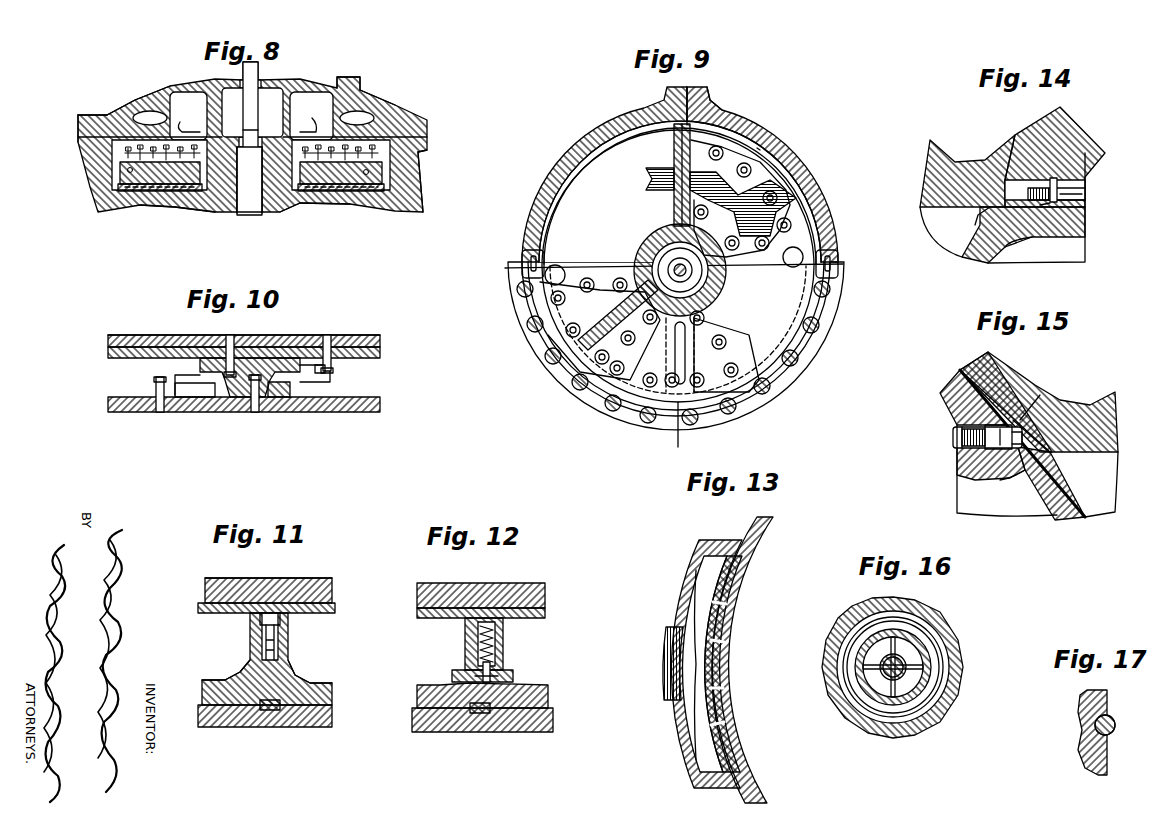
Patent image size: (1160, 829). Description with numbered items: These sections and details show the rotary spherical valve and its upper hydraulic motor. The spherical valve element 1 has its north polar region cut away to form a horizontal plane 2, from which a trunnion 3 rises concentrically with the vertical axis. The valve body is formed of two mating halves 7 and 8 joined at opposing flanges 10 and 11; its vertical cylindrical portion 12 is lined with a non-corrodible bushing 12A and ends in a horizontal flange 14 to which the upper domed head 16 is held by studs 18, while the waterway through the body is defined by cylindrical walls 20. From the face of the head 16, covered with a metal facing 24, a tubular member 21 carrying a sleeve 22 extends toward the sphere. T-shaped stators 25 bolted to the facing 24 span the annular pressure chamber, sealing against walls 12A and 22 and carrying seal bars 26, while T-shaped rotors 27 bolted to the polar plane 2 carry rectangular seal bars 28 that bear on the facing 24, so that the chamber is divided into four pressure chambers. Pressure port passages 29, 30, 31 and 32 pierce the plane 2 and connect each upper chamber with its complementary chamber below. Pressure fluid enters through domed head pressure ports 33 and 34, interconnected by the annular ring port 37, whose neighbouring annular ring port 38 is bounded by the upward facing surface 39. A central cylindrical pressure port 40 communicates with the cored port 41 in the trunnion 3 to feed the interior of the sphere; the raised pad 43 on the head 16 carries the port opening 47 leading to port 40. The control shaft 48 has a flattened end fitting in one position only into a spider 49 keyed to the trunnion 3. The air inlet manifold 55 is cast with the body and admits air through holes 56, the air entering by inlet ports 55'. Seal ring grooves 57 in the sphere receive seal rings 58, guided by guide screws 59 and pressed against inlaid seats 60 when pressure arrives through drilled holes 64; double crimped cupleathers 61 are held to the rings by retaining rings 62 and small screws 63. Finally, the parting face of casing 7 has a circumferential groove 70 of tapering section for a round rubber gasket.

In FIG. 8, the spherical valve element 1 is at (385, 212).
In FIG. 10, the spherical valve element 1 is at (148, 412).
In FIG. 11, the spherical valve element 1 is at (332, 720).
In FIG. 12, the spherical valve element 1 is at (412, 718).
In FIG. 13, the spherical valve element 1 is at (733, 640).
In FIG. 14, the spherical valve element 1 is at (985, 264).
In FIG. 15, the spherical valve element 1 is at (1062, 520).
In FIG. 8, the horizontal polar plane 2 is at (198, 212).
In FIG. 10, the horizontal polar plane 2 is at (125, 392).
In FIG. 11, the horizontal polar plane 2 is at (202, 692).
In FIG. 12, the horizontal polar plane 2 is at (548, 697).
In FIG. 8, the upper trunnion 3 is at (232, 213).
In FIG. 9, the upper trunnion 3 is at (654, 238).
In FIG. 16, the upper trunnion 3 is at (920, 625).
In FIG. 9, the valve body half 7 is at (614, 130).
In FIG. 14, the valve body half 7 is at (925, 175).
In FIG. 17, the valve body half 7 is at (1107, 705).
In FIG. 9, the valve body half 8 is at (757, 148).
In FIG. 15, the valve body half 8 is at (1115, 418).
In FIG. 9, the valve body flange 10 is at (667, 92).
In FIG. 9, the valve body flange 11 is at (707, 92).
In FIG. 8, the cylindrical portion 12 is at (405, 187).
In FIG. 9, the cylindrical portion 12 is at (562, 208).
In FIG. 8, the cylindrical bushing 12A is at (420, 165).
In FIG. 9, the cylindrical bushing 12A is at (572, 186).
In FIG. 8, the horizontal flange 14 is at (78, 138).
In FIG. 9, the horizontal flange 14 is at (840, 360).
In FIG. 8, the upper domed head 16 is at (110, 100).
In FIG. 10, the upper domed head 16 is at (362, 340).
In FIG. 11, the upper domed head 16 is at (332, 590).
In FIG. 12, the upper domed head 16 is at (417, 588).
In FIG. 9, the studs 18 is at (798, 362).
In FIG. 14, the cylindrical wall 20 is at (950, 208).
In FIG. 15, the cylindrical wall 20 is at (1080, 453).
In FIG. 9, the tubular member 21 is at (666, 230).
In FIG. 9, the non-corrodible metal sleeve 22 is at (722, 274).
In FIG. 10, the non-corrodible metal facing 24 is at (120, 358).
In FIG. 11, the non-corrodible metal facing 24 is at (198, 610).
In FIG. 12, the non-corrodible metal facing 24 is at (545, 614).
In FIG. 9, the T-shaped stator 25 is at (654, 176).
In FIG. 10, the T-shaped stator 25 is at (338, 370).
In FIG. 10, the seal bar 26 is at (282, 410).
In FIG. 8, the T-shaped rotor 27 is at (118, 205).
In FIG. 9, the T-shaped rotor 27 is at (545, 300).
In FIG. 10, the T-shaped rotor 27 is at (182, 378).
In FIG. 11, the T-shaped rotor 27 is at (292, 680).
In FIG. 12, the T-shaped rotor 27 is at (505, 652).
In FIG. 8, the rectangular seal bar 28 is at (112, 158).
In FIG. 9, the rectangular seal bar 28 is at (648, 252).
In FIG. 10, the rectangular seal bar 28 is at (218, 335).
In FIG. 11, the rectangular seal bar 28 is at (280, 635).
In FIG. 12, the rectangular seal bar 28 is at (468, 628).
In FIG. 9, the pressure port passage 29 is at (718, 122).
In FIG. 9, the pressure port passage 30 is at (650, 387).
In FIG. 9, the pressure port passage 31 is at (558, 265).
In FIG. 9, the pressure port passage 32 is at (790, 267).
In FIG. 8, the domed head pressure port 33 is at (307, 122).
In FIG. 8, the domed head pressure port 34 is at (189, 121).
In FIG. 8, the annular ring port 37 is at (251, 116).
In FIG. 8, the annular ring port 38 is at (253, 119).
In FIG. 8, the upward facing surface 39 is at (145, 92).
In FIG. 10, the upward facing surface 39 is at (148, 333).
In FIG. 11, the upward facing surface 39 is at (250, 576).
In FIG. 8, the cylindrical pressure port 40 is at (252, 106).
In FIG. 8, the cored port 41 is at (249, 181).
In FIG. 8, the raised pad 43 is at (352, 76).
In FIG. 8, the port opening 47 is at (282, 78).
In FIG. 16, the control shaft 48 is at (880, 678).
In FIG. 16, the spider 49 is at (945, 655).
In FIG. 13, the air inlet manifold 55 is at (692, 664).
In FIG. 13, the inlet port 55' is at (659, 663).
In FIG. 13, the hole 56 is at (705, 700).
In FIG. 14, the seal ring groove 57 is at (1030, 240).
In FIG. 15, the seal ring groove 57 is at (1000, 378).
In FIG. 14, the seal ring 58 is at (985, 210).
In FIG. 15, the seal ring 58 is at (1022, 480).
In FIG. 15, the guide screw 59 is at (1040, 390).
In FIG. 14, the seat 60 is at (1012, 162).
In FIG. 15, the seat 60 is at (1055, 405).
In FIG. 14, the cupleather 61 is at (1085, 222).
In FIG. 15, the cupleather 61 is at (957, 460).
In FIG. 14, the retaining ring 62 is at (1070, 180).
In FIG. 15, the retaining ring 62 is at (985, 428).
In FIG. 14, the small screw 63 is at (1042, 235).
In FIG. 14, the drilled hole 64 is at (1085, 196).
In FIG. 9, the circumferential groove 70 is at (674, 402).
In FIG. 17, the circumferential groove 70 is at (1110, 735).